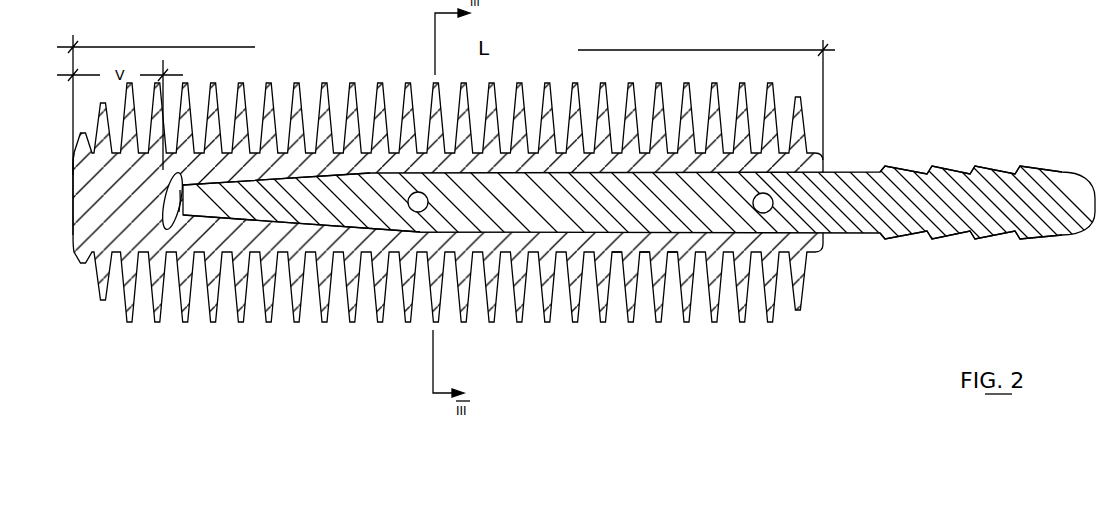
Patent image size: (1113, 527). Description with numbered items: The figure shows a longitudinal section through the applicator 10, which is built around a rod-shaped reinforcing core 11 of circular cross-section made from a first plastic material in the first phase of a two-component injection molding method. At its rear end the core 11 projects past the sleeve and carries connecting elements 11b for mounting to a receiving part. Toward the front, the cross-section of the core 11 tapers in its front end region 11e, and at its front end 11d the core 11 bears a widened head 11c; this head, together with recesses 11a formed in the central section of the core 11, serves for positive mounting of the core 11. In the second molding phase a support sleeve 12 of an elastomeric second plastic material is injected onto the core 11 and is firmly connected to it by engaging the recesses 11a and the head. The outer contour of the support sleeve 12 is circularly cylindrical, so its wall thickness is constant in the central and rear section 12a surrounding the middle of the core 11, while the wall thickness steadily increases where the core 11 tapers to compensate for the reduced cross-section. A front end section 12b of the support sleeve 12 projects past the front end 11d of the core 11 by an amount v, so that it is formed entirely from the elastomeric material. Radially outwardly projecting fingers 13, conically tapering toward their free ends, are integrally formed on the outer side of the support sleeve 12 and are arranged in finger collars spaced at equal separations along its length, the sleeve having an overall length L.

The applicator 10 is at (565, 226).
The reinforcing core 11 is at (565, 255).
The recesses 11a is at (418, 213).
The connecting elements 11b is at (896, 166).
The widened head 11c is at (265, 206).
The front end 11d is at (156, 208).
The front end region 11e is at (179, 205).
The support sleeve 12 is at (424, 208).
The central and rear section 12a is at (531, 237).
The front end section 12b is at (122, 192).
The fingers 13 is at (630, 288).